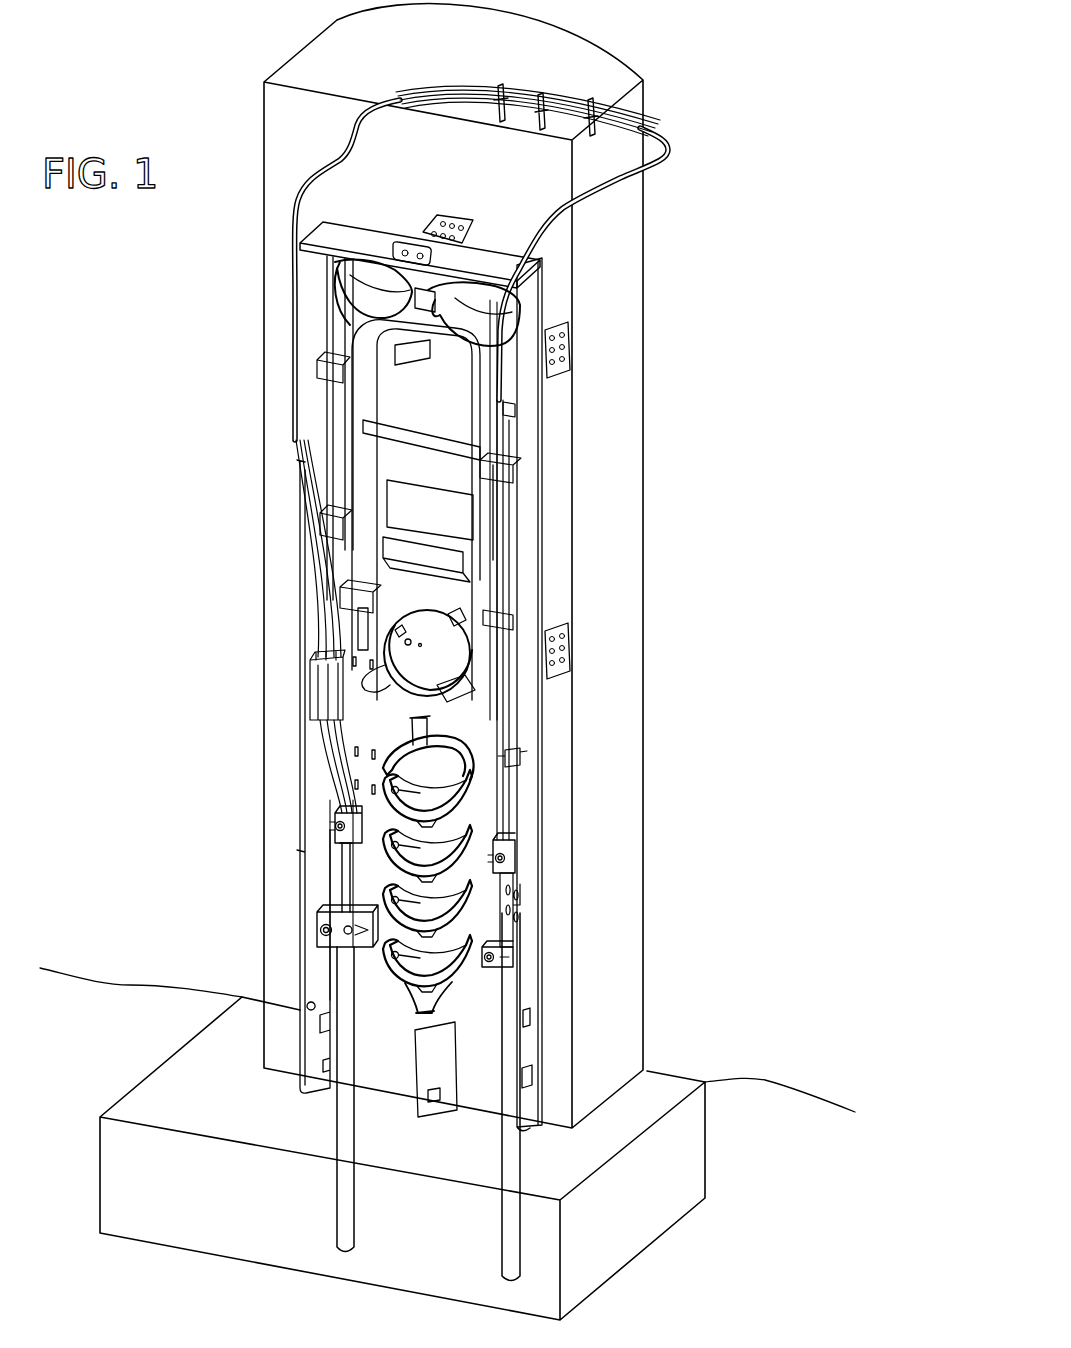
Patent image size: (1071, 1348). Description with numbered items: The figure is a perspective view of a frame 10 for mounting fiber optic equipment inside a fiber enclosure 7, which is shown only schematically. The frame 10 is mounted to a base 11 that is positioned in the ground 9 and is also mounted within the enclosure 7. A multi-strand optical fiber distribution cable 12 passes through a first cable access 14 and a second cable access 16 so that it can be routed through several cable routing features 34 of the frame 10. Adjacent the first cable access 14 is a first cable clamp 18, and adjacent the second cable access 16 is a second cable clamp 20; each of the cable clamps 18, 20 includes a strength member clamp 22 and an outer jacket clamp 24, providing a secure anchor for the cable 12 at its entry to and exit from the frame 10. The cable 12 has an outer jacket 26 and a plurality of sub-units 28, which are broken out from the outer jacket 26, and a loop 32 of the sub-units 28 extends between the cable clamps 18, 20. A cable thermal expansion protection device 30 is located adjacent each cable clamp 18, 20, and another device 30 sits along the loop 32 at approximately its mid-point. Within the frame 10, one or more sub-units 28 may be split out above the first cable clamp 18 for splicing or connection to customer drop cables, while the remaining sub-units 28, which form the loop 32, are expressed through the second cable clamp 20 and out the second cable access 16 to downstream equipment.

The enclosure 7 is at (265, 567).
The ground 9 is at (104, 1053).
The frame 10 is at (288, 497).
The base 11 is at (221, 1228).
The multi-strand optical fiber distribution cable 12 is at (510, 1173).
The first cable access 14 is at (335, 1085).
The second cable access 16 is at (512, 1116).
The first cable clamp 18 is at (335, 867).
The second cable clamp 20 is at (515, 900).
The strength member clamp 22 is at (345, 835).
The outer jacket clamp 24 is at (337, 930).
The outer jacket 26 is at (345, 885).
The sub-units 28 is at (308, 190).
The cable thermal expansion protection device 30 is at (575, 92).
The loop 32 is at (350, 122).
The cable routing features 34 is at (343, 283).